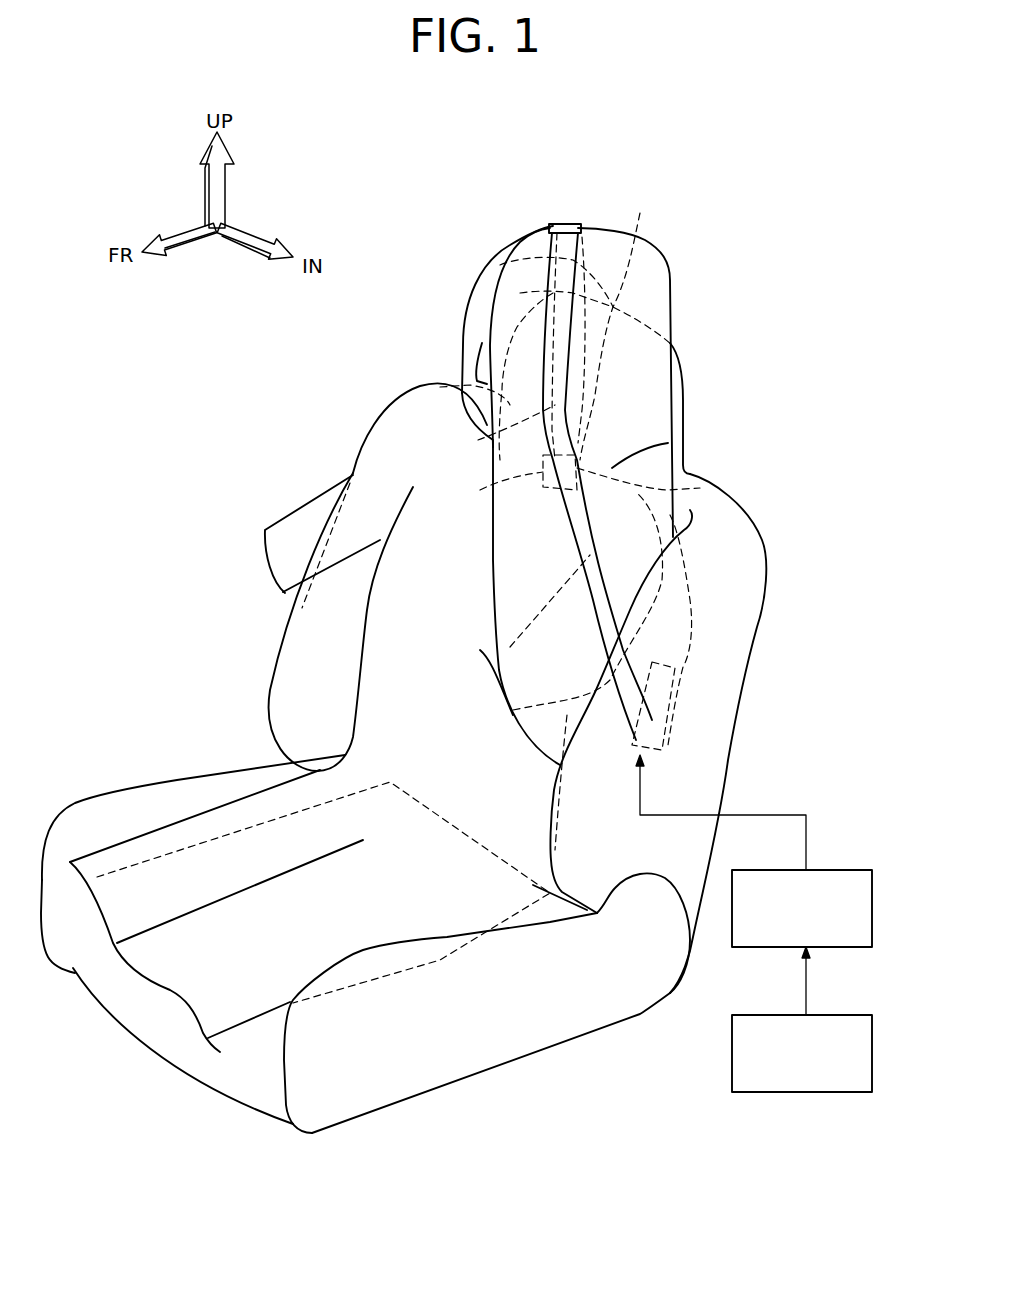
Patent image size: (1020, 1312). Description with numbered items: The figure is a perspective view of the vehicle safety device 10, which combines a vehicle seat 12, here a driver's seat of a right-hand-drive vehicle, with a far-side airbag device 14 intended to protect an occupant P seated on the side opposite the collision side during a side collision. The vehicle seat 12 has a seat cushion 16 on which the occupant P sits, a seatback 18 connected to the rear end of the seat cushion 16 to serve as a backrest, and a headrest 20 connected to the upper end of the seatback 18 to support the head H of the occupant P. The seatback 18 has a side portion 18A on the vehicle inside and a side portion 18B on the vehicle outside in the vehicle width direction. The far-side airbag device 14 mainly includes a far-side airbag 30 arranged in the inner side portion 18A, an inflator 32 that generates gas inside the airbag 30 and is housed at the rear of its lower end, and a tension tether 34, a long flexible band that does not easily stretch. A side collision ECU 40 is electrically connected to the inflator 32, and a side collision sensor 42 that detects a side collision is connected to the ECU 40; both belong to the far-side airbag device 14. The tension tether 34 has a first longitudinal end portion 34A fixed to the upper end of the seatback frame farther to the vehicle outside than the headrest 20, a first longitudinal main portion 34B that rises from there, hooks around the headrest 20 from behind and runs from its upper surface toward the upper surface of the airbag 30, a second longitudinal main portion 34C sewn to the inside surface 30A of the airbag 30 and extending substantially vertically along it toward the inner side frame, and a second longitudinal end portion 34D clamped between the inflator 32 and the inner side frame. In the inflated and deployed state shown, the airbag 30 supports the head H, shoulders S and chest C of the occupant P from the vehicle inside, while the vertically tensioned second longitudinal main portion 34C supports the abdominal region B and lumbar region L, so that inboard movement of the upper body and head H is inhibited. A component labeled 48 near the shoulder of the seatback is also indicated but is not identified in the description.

The vehicle safety device 10 is at (212, 420).
The vehicle seat 12 is at (559, 1048).
The far-side airbag device 14 is at (690, 262).
The seat cushion 16 is at (448, 1087).
The seatback 18 is at (757, 627).
The seatback inner side portion 18A is at (548, 795).
The seatback outer side portion 18B is at (375, 422).
The headrest 20 is at (685, 403).
The far-side airbag 30 is at (672, 297).
The inside surface 30A is at (633, 455).
The inflator 32 is at (683, 684).
The tension tether 34 is at (553, 522).
The first longitudinal end portion 34A is at (540, 478).
The first longitudinal main portion 34B is at (625, 320).
The second longitudinal main portion 34C is at (590, 550).
The second longitudinal end portion 34D is at (673, 742).
The side collision ECU 40 is at (837, 870).
The side collision sensor 42 is at (837, 1015).
The airbag module 48 is at (422, 403).
The head H is at (467, 296).
The shoulders S is at (675, 560).
The chest C is at (412, 548).
The occupant P is at (357, 603).
The abdominal region B is at (382, 688).
The lumbar region L is at (348, 755).